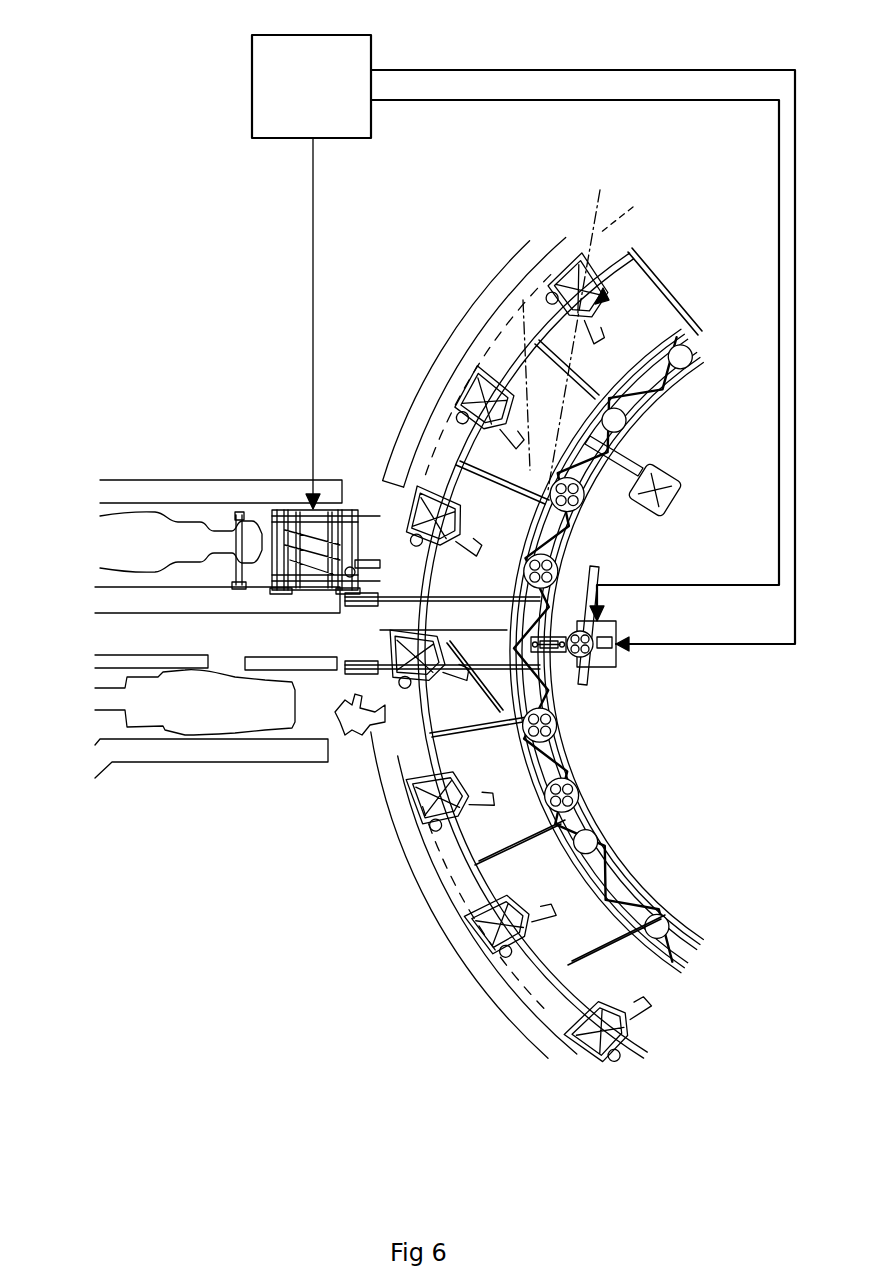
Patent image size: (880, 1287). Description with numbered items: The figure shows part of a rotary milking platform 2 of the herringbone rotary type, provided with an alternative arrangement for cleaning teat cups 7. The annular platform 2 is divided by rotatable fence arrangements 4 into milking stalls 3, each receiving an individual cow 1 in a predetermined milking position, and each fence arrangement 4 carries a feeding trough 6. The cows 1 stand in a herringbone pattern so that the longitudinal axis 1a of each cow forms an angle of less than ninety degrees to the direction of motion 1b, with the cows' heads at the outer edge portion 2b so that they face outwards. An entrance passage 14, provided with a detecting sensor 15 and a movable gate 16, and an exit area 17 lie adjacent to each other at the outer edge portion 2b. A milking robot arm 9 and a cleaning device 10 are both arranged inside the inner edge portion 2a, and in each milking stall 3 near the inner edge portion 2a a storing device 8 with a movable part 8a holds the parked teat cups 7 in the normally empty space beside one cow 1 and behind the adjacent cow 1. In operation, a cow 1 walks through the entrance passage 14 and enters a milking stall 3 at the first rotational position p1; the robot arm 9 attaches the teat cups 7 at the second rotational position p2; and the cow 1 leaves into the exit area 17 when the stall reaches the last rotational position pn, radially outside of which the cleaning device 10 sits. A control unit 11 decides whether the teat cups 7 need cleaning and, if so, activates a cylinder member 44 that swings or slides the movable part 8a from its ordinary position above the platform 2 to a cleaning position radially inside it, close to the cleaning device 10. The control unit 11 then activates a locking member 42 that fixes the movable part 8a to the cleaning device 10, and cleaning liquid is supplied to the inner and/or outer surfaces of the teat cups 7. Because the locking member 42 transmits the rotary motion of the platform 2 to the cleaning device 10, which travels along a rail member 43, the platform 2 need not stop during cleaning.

The control unit 11 is at (357, 60).
The cow 1 is at (185, 538).
The longitudinal axis of the cow 1a is at (596, 225).
The direction of motion of the cows 1b is at (638, 360).
The rotary platform 2 is at (468, 875).
The inner edge portion of the platform 2a is at (594, 818).
The outer edge portion of the platform 2b is at (420, 855).
The milking stall 3 is at (553, 963).
The rotatable fence arrangement 4 is at (380, 548).
The feeding trough 6 is at (495, 427).
The teat cup 7 is at (570, 805).
The storing device 8 is at (550, 728).
The movable part of the storing device 8a is at (556, 652).
The milking robot arm 9 is at (608, 456).
The cleaning device 10 is at (617, 670).
The entrance passage 14 is at (212, 566).
The detecting sensor 15 is at (238, 537).
The movable gate 16 is at (298, 508).
The exit area 17 is at (310, 730).
The locking member 42 is at (600, 640).
The rail member 43 is at (588, 586).
The cylinder member 44 is at (548, 646).
The first rotational position p1 is at (470, 497).
The second rotational position p2 is at (540, 320).
The last rotational position pn is at (410, 753).